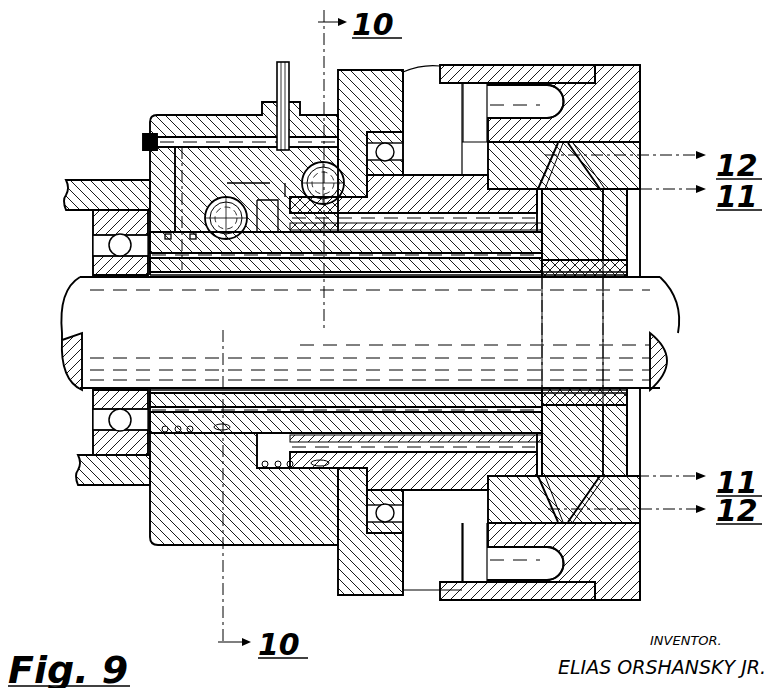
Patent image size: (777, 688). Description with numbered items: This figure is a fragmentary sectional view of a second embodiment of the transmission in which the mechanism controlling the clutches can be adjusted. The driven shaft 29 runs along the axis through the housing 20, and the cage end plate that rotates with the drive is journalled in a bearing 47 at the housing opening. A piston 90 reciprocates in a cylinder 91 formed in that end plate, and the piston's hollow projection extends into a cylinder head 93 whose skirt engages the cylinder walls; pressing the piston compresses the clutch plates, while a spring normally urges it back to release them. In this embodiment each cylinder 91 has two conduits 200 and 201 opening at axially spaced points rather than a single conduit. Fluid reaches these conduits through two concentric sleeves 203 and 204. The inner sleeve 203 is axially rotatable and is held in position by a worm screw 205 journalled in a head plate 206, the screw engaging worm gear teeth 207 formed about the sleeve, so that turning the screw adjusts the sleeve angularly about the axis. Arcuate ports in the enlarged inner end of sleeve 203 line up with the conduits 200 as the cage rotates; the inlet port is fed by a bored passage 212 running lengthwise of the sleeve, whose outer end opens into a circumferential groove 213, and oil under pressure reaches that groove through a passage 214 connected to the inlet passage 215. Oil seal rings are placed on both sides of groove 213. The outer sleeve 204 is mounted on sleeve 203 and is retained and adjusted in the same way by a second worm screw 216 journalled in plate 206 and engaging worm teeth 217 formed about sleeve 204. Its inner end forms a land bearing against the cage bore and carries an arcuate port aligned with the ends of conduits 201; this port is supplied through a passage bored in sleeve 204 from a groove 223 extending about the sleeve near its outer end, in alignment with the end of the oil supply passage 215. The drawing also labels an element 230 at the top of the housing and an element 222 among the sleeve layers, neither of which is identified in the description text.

The driven shaft 29 is at (92, 314).
The worm screw 205 is at (218, 208).
The worm gear teeth 207 is at (165, 470).
The passage 214 is at (236, 113).
The inlet passage 215 is at (261, 117).
The pin 230 is at (281, 62).
The worm screw 216 is at (340, 180).
The housing 20 is at (377, 592).
The bearing 47 is at (404, 157).
The cylinder 91 is at (470, 100).
The cylinder head 93 is at (492, 67).
The piston 90 is at (628, 73).
The conduit 200 is at (538, 156).
The conduit 201 is at (641, 146).
The sleeve 204 is at (480, 232).
The ring 222 is at (332, 222).
The bored passage 212 is at (348, 253).
The sleeve 203 is at (375, 268).
The head plate 206 is at (328, 548).
The circumferential groove 213 is at (182, 430).
The groove 223 is at (266, 464).
The worm teeth 217 is at (320, 466).